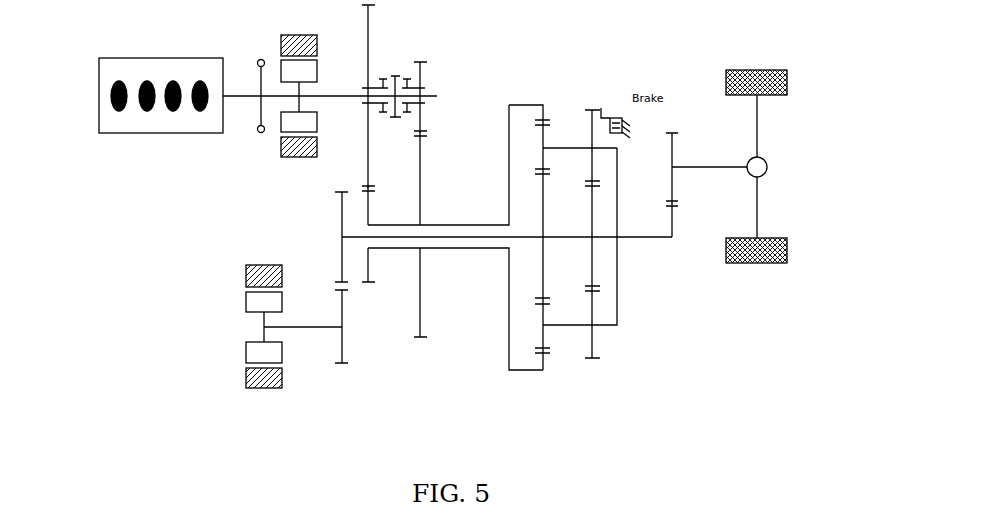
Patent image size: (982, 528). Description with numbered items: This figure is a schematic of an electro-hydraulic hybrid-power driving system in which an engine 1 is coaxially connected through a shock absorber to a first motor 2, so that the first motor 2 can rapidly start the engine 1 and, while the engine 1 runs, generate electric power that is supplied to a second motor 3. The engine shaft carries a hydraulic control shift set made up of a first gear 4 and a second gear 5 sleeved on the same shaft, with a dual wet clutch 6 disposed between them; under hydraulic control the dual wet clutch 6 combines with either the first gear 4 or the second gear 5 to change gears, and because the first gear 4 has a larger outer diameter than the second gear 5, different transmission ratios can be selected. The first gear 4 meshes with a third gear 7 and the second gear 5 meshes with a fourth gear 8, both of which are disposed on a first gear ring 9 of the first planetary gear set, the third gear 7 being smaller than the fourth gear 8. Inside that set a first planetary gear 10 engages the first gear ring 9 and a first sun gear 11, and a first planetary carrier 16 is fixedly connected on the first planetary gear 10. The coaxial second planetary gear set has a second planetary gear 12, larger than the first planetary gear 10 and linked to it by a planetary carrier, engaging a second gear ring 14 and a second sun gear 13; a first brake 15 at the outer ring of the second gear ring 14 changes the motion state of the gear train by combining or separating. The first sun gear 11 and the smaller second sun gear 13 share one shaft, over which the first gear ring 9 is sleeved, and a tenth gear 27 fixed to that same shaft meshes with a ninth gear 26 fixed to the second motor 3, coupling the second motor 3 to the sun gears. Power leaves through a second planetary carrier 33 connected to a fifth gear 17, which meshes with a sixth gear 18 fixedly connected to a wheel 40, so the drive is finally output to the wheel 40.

The engine 1 is at (100, 133).
The first motor 2 is at (280, 157).
The second motor 3 is at (245, 288).
The first gear 4 is at (368, 32).
The second gear 5 is at (421, 80).
The dual wet clutch 6 is at (393, 75).
The third gear 7 is at (369, 212).
The fourth gear 8 is at (421, 198).
The first gear ring 9 is at (529, 103).
The first planetary gear 10 is at (543, 138).
The first sun gear 11 is at (543, 217).
The second planetary gear 12 is at (592, 158).
The second sun gear 13 is at (592, 250).
The second gear ring 14 is at (601, 108).
The first brake 15 is at (625, 128).
The first planetary carrier 16 is at (587, 148).
The fifth gear 17 is at (672, 230).
The sixth gear 18 is at (672, 153).
The ninth gear 26 is at (342, 313).
The tenth gear 27 is at (342, 230).
The second planetary carrier 33 is at (617, 170).
The wheel 40 is at (788, 70).